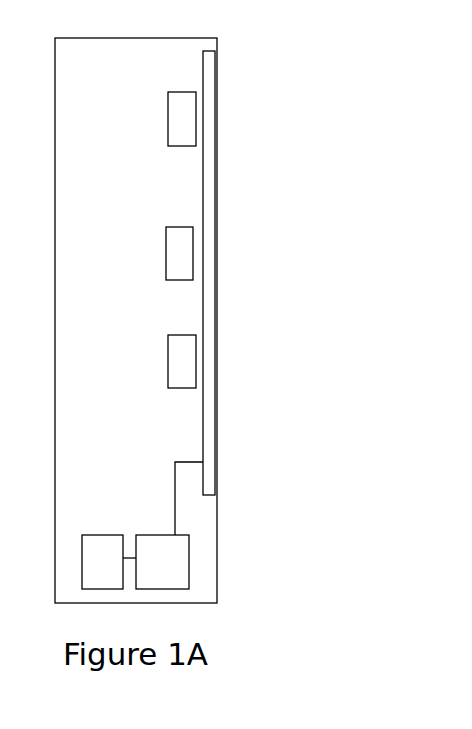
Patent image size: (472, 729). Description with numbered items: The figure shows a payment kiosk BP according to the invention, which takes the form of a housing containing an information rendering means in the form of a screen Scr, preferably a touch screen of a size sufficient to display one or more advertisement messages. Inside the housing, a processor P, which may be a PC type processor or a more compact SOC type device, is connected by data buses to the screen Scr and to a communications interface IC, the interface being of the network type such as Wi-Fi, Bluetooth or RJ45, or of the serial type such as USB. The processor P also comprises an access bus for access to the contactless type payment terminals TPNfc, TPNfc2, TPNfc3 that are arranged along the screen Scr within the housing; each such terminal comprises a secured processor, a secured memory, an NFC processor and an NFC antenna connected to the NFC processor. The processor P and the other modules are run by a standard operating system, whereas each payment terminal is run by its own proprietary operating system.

The payment kiosk BP is at (135, 37).
The screen Scr is at (217, 92).
The contactless type payment terminal TPNfc is at (168, 133).
The contactless type payment terminal TPNfc2 is at (166, 267).
The contactless type payment terminal TPNfc3 is at (168, 373).
The communications interface IC is at (102, 562).
The processor P is at (163, 525).